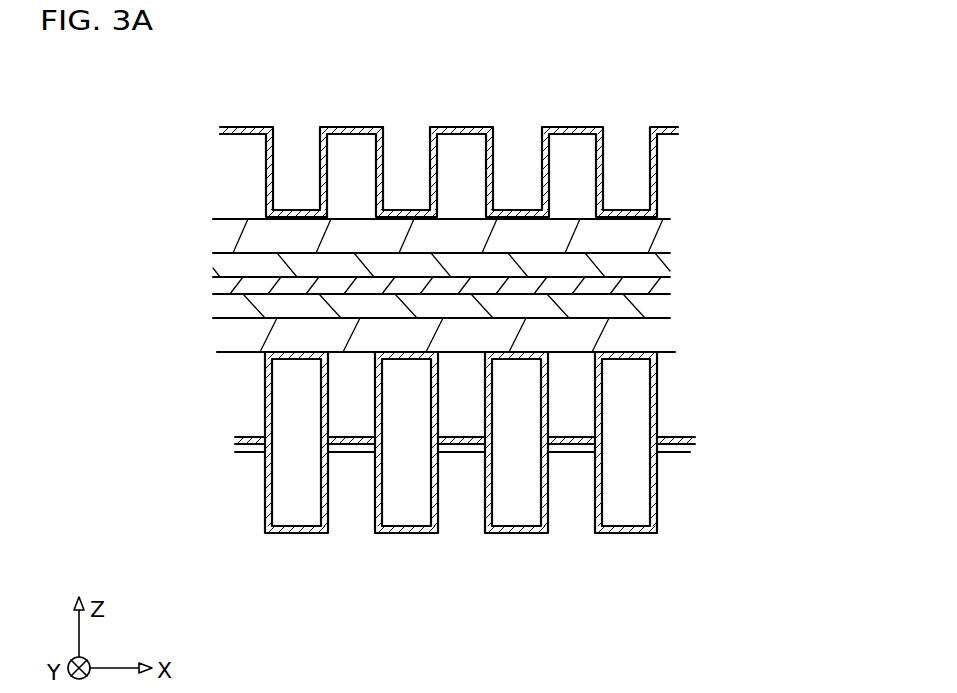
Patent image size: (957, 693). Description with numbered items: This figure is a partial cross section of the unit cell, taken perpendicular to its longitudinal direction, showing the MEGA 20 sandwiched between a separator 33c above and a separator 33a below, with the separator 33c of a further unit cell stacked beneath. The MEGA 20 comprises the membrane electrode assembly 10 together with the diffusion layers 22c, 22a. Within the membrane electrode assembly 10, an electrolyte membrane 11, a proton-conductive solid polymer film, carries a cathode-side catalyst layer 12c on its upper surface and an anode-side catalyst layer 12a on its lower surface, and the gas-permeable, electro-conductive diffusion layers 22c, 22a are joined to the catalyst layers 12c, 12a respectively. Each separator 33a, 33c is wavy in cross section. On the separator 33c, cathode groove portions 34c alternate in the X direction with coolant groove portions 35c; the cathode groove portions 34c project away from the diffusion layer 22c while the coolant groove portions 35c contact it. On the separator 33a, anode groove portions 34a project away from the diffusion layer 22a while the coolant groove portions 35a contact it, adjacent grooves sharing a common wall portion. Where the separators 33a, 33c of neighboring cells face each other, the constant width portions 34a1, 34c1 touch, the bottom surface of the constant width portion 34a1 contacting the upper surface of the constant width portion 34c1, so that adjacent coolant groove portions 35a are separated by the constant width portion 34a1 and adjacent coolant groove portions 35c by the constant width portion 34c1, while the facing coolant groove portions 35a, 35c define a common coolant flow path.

The membrane electrode assembly 10 is at (506, 286).
The electrolyte membrane 11 is at (650, 283).
The anode-side catalyst layer 12a is at (486, 311).
The cathode-side catalyst layer 12c is at (657, 267).
The MEGA 20 is at (535, 285).
The anode-side diffusion layer 22a is at (512, 341).
The cathode-side diffusion layer 22c is at (650, 233).
The anode separator 33a is at (547, 409).
The cathode separator 33c is at (563, 115).
The anode groove portion 34a is at (454, 406).
The constant width portion 34a1 is at (362, 447).
The cathode groove portion 34c is at (461, 155).
The constant width portion 34c1 is at (377, 192).
The coolant groove portion 35a is at (424, 386).
The coolant groove portion 35c is at (311, 172).